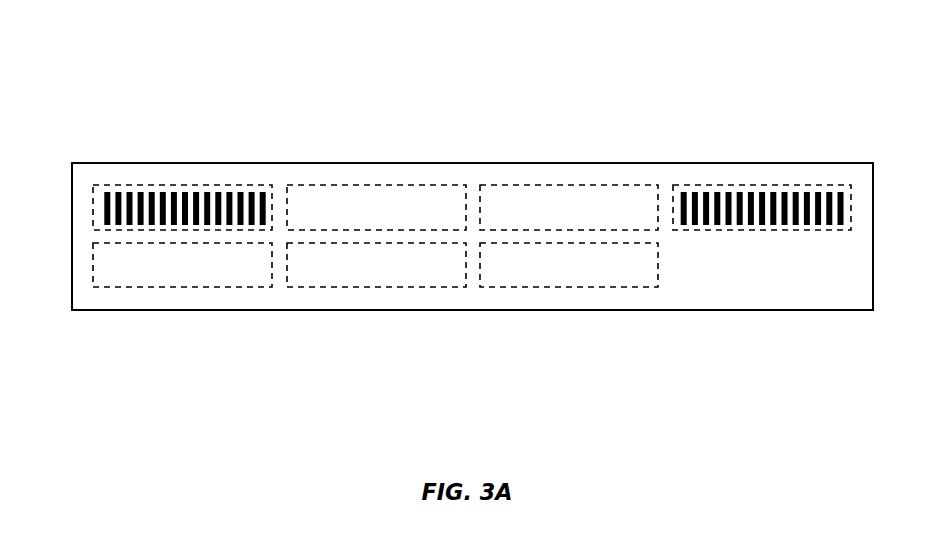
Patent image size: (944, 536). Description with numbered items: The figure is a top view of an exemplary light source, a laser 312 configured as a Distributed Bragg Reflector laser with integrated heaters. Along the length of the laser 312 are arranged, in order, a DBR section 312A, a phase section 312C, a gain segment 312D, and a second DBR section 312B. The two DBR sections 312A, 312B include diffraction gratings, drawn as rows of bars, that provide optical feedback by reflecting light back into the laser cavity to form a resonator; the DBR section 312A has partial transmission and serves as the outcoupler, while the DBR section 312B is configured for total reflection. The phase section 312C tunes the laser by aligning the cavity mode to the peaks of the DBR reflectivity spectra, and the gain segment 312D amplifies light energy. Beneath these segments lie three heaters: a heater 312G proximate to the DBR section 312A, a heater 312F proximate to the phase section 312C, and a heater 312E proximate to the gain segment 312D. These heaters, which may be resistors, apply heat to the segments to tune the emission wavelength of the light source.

The laser 312 is at (77, 93).
The DBR section 312A is at (212, 186).
The DBR section 312B is at (782, 187).
The phase section 312C is at (377, 187).
The gain segment 312D is at (567, 187).
The heater 312E is at (590, 287).
The heater 312F is at (397, 287).
The heater 312G is at (185, 287).